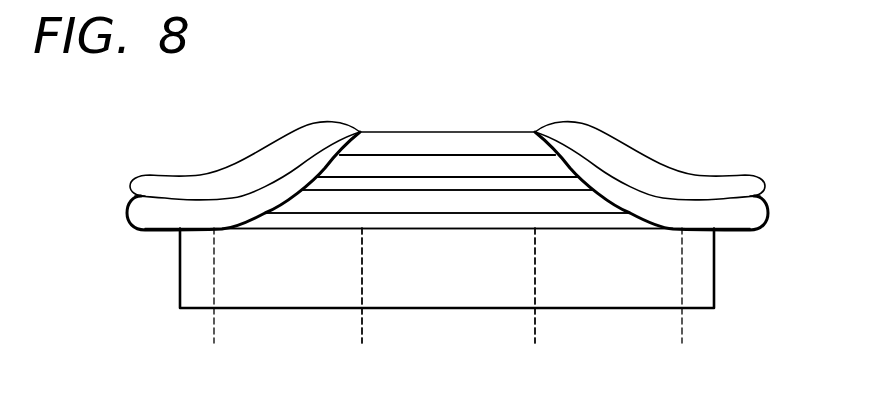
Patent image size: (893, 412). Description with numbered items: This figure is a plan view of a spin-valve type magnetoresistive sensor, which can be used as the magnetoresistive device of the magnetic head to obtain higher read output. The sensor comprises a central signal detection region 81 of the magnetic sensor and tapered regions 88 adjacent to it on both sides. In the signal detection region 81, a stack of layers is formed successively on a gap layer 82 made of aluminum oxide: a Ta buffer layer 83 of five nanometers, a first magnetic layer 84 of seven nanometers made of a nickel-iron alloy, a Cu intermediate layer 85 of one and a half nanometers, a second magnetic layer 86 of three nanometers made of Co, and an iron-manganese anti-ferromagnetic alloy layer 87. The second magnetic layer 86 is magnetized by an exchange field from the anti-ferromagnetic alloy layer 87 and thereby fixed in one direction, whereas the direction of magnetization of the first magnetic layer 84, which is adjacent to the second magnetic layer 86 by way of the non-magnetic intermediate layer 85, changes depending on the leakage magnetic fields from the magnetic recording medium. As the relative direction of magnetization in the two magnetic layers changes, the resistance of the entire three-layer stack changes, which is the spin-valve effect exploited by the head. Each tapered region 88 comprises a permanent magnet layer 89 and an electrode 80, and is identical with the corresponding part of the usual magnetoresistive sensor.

The electrode 80 is at (277, 143).
The signal detection region 81 is at (535, 342).
The gap layer 82 is at (707, 272).
The buffer layer 83 is at (500, 220).
The first magnetic layer 84 is at (457, 200).
The intermediate layer 85 is at (425, 185).
The second magnetic layer 86 is at (393, 160).
The antiferromagnetic alloy layer 87 is at (373, 140).
The tapered region 88 is at (214, 342).
The permanent magnet layer 89 is at (243, 197).